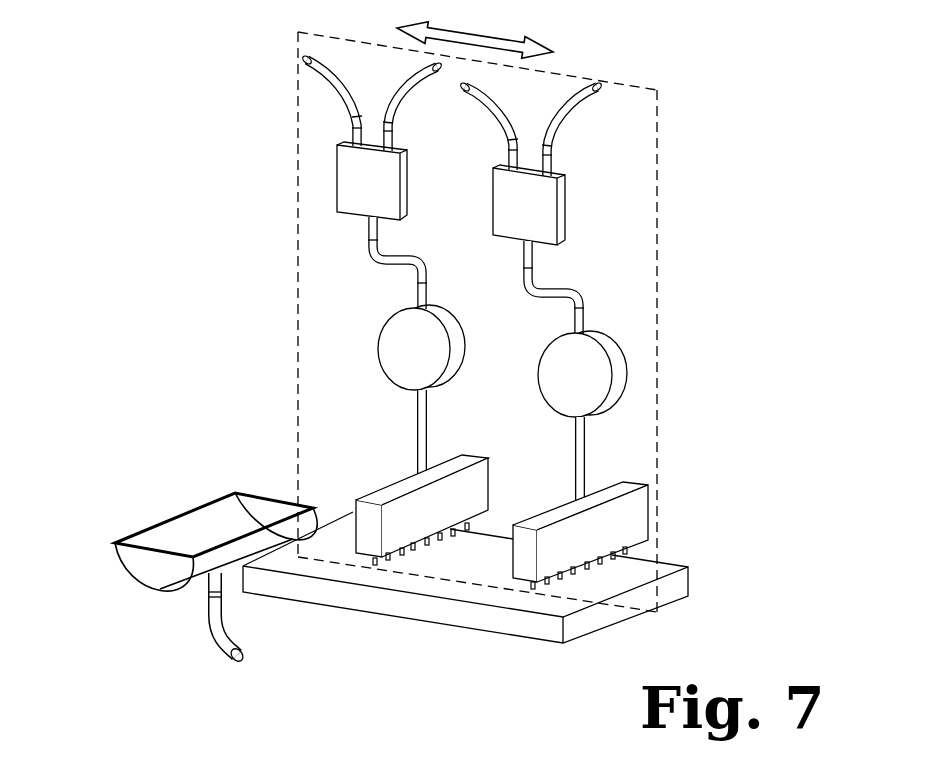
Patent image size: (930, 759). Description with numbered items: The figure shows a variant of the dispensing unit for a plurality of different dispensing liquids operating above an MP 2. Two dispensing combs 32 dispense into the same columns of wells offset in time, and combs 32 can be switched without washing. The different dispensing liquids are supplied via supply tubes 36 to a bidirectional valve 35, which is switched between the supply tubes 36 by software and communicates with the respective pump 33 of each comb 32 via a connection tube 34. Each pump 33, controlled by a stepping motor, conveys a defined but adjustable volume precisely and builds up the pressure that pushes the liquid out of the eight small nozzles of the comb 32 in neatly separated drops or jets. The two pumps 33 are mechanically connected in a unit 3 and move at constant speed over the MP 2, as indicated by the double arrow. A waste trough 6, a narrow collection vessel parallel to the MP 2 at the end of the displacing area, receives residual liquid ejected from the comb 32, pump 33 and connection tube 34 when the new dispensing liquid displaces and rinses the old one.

The MP 2 is at (677, 583).
The movable carriage 3 is at (657, 327).
The waste trough 6 is at (202, 532).
The dispensing comb 32 is at (527, 553).
The pump 33 is at (570, 405).
The connection tube 34 is at (558, 286).
The bidirectional valve 35 is at (507, 228).
The supply tubes 36 is at (545, 120).